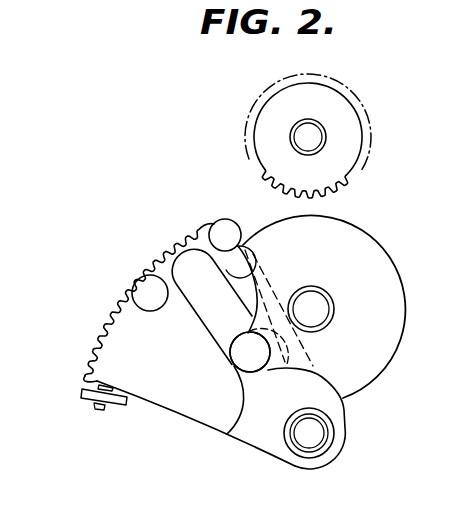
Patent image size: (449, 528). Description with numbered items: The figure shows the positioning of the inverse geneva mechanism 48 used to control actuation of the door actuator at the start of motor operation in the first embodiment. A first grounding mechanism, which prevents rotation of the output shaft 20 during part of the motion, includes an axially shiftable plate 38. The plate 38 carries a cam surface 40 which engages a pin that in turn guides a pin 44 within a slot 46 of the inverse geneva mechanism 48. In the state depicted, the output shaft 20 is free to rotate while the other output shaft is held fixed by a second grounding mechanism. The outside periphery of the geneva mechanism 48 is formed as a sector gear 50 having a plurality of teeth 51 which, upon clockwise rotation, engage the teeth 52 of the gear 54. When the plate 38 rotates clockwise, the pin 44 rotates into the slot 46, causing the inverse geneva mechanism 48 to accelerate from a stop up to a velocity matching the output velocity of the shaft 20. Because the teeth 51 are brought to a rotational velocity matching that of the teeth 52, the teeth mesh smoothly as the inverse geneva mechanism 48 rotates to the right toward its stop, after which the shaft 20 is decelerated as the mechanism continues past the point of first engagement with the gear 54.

The output shaft 20 is at (302, 132).
The axially shiftable plate 38 is at (388, 375).
The cam surface 40 is at (230, 232).
The pin 44 is at (241, 337).
The slot 46 is at (195, 300).
The inverse geneva mechanism 48 is at (183, 380).
The sector gear 50 is at (118, 286).
The teeth 51 is at (79, 356).
The teeth 52 is at (366, 167).
The gear 54 is at (377, 118).